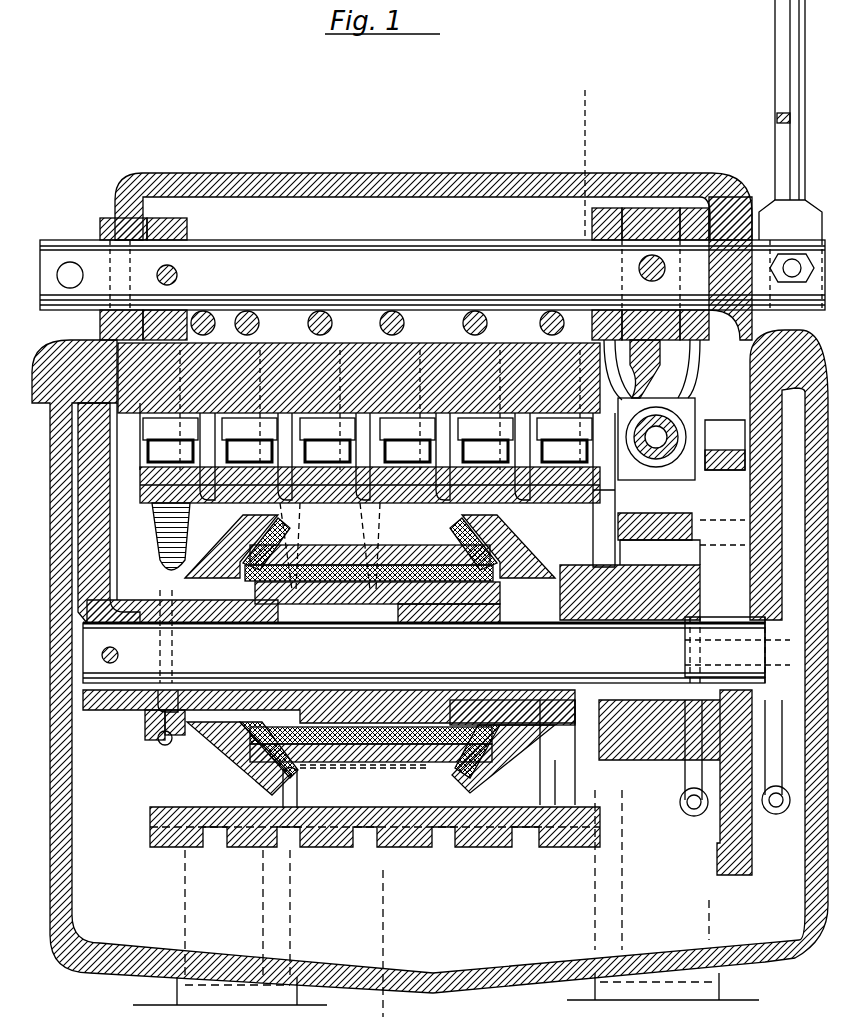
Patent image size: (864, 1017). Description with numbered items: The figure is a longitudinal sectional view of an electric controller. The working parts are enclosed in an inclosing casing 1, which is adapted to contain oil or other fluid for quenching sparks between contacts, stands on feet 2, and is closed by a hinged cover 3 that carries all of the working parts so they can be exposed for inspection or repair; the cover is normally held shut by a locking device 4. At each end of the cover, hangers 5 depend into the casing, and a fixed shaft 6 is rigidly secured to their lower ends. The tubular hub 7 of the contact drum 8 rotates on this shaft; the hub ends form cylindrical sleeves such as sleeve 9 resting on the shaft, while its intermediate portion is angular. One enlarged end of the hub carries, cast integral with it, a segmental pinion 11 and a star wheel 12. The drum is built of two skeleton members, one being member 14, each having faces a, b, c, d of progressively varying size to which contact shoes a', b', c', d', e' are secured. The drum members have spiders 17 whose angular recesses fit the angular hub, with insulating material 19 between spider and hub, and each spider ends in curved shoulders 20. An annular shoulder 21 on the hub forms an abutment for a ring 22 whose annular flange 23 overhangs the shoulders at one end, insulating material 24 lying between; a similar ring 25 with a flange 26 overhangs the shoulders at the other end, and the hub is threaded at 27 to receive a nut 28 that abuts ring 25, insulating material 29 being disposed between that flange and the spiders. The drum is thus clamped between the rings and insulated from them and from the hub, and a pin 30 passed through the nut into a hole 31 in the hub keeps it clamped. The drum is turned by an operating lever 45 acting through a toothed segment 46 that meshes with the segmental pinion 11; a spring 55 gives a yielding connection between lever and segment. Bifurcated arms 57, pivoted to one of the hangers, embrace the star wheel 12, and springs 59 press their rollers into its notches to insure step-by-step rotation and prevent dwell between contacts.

The inclosing casing 1 is at (790, 912).
The feet 2 is at (177, 987).
The hinged cover 3 is at (266, 178).
The locking device 4 is at (432, 215).
The hangers 5 is at (110, 508).
The fixed shaft 6 is at (701, 647).
The tubular hub 7 is at (397, 623).
The contact drum 8 is at (364, 503).
The sleeve 9 is at (130, 708).
The segmental pinion 11 is at (625, 546).
The star wheel 12 is at (730, 415).
The skeleton member 14 is at (588, 505).
The spiders 17 is at (415, 530).
The insulating material 19 is at (335, 566).
The curved shoulders 20 is at (500, 545).
The annular shoulder 21 is at (525, 745).
The ring 22 is at (497, 752).
The annular flange 23 is at (490, 775).
The insulating material 24 is at (422, 763).
The ring 25 is at (239, 758).
The flange 26 is at (252, 775).
The threaded portion 27 is at (120, 656).
The nut 28 is at (144, 735).
The insulating material 29 is at (298, 780).
The pin 30 is at (162, 565).
The hole 31 is at (182, 675).
The operating lever 45 is at (772, 45).
The toothed segment 46 is at (640, 205).
The spring 55 is at (690, 410).
The bifurcated arms 57 is at (685, 780).
The springs 59 is at (686, 812).
The face a is at (359, 423).
The face b is at (365, 476).
The face c is at (405, 545).
The face d is at (384, 546).
The contact shoe a' is at (160, 442).
The contact shoe b' is at (240, 442).
The contact shoe c' is at (319, 443).
The contact shoe d' is at (396, 442).
The contact shoe e' is at (513, 442).